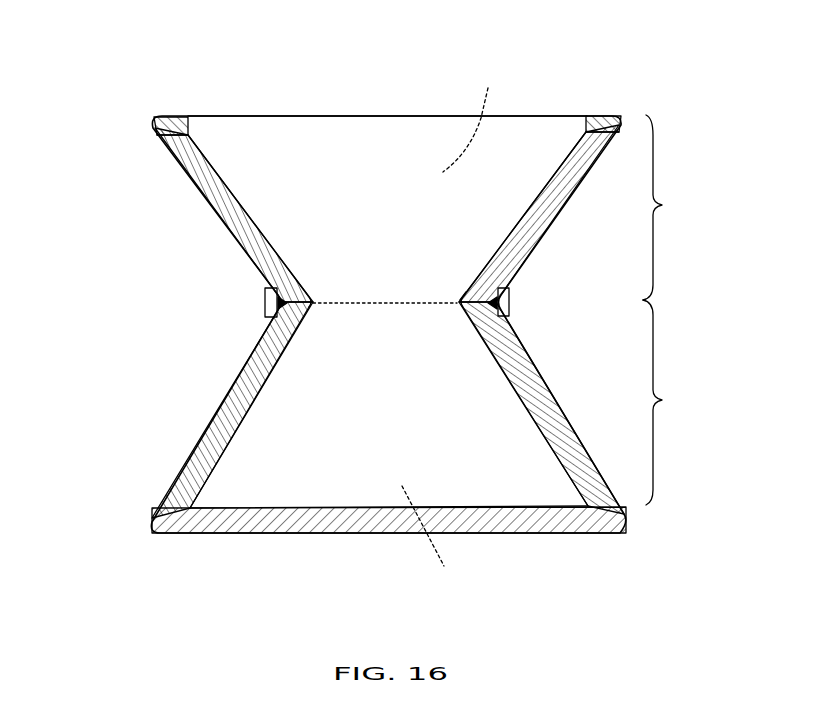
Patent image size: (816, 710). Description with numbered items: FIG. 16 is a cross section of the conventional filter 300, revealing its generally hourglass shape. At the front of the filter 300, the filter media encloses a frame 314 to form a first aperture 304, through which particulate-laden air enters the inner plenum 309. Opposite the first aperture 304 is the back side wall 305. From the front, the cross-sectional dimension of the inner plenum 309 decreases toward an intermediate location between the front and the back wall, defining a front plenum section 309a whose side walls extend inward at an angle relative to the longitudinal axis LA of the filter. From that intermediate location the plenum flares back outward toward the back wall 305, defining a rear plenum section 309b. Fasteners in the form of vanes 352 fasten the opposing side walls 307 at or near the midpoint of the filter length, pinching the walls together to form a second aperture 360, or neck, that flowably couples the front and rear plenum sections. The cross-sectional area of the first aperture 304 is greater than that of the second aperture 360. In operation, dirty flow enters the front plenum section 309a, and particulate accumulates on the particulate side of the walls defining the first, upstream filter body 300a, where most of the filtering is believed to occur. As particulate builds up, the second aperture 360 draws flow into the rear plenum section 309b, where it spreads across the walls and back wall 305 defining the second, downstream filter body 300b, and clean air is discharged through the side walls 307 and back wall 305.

The filter 300 is at (126, 74).
The first filter body 300a is at (665, 204).
The second filter body 300b is at (665, 402).
The first aperture 304 is at (289, 116).
The back side wall 305 is at (273, 534).
The side wall 307 is at (514, 295).
The inner plenum 309 is at (508, 373).
The front plenum section 309a is at (276, 197).
The rear plenum section 309b is at (272, 462).
The frame 314 is at (167, 117).
The vanes 352 is at (456, 310).
The second aperture 360 is at (372, 292).
The longitudinal axis LA is at (448, 328).